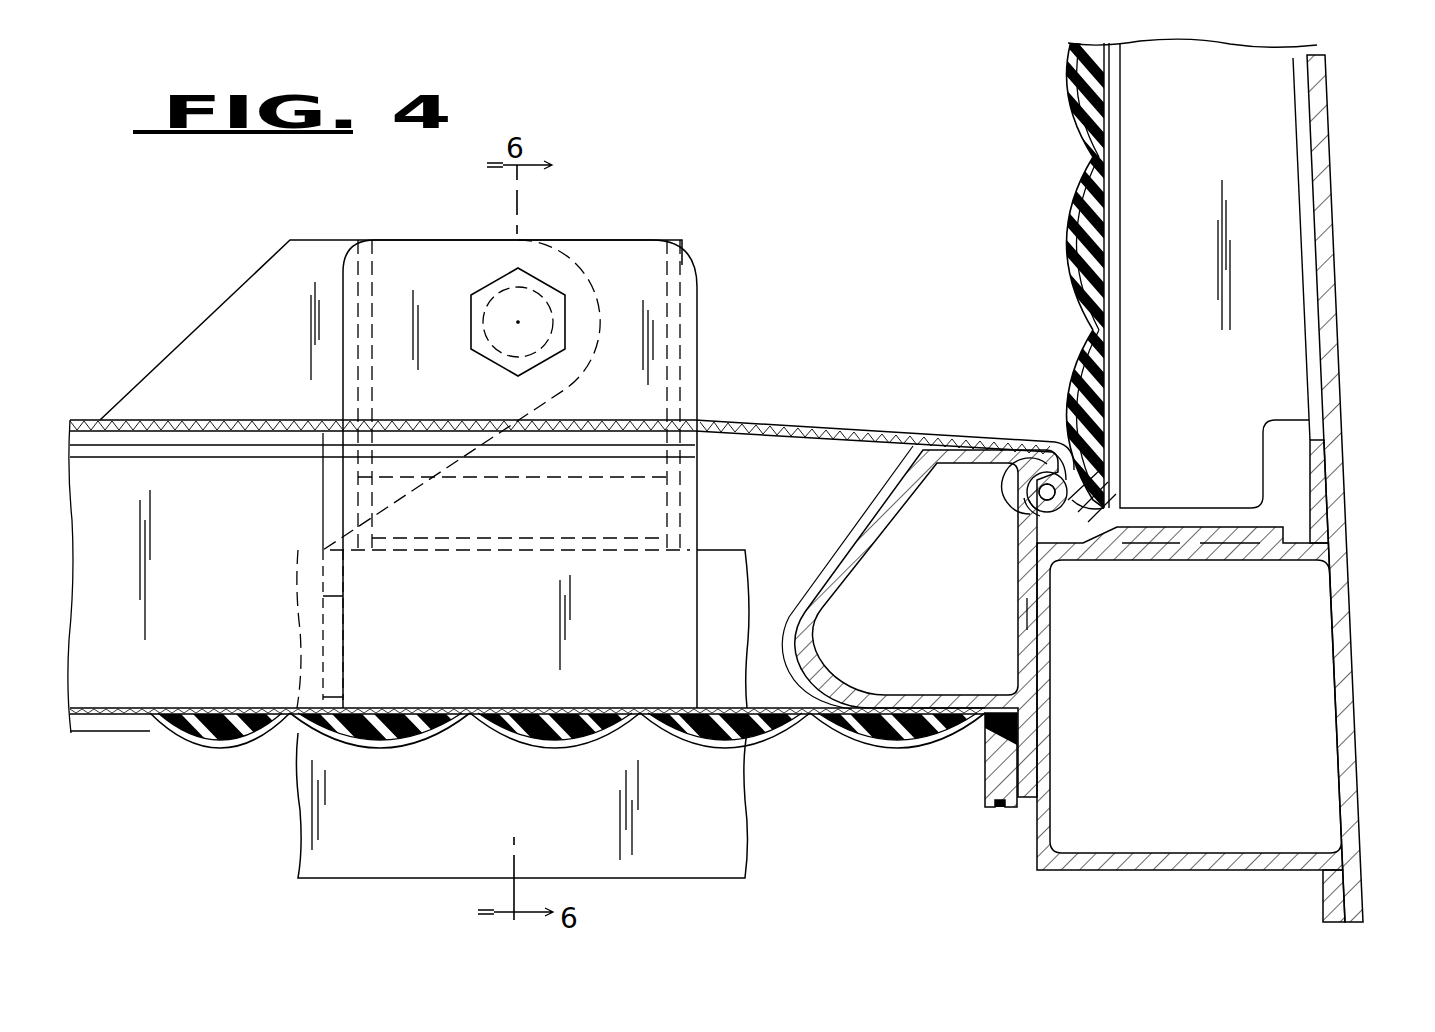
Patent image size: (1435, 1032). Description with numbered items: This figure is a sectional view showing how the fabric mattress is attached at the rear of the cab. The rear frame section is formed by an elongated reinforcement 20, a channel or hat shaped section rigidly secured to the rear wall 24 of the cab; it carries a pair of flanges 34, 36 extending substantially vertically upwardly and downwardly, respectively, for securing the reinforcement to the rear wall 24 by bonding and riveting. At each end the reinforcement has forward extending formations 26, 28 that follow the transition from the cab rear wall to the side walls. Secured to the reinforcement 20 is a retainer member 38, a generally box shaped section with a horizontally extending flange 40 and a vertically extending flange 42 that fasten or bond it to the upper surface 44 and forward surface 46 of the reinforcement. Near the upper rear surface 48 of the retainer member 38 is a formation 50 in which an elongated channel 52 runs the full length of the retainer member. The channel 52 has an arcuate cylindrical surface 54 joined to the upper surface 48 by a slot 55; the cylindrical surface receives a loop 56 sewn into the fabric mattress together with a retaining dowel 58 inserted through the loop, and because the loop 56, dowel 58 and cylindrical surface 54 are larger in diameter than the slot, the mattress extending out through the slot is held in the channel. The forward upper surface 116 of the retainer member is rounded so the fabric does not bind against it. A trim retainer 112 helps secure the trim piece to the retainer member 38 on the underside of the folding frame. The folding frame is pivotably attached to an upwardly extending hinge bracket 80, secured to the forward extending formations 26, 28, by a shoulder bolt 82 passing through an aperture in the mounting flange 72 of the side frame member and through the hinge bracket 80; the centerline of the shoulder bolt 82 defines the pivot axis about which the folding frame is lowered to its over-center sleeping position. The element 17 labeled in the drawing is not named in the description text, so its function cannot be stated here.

The panel 17 is at (767, 425).
The mounting flange 72 is at (292, 349).
The hinge bracket 80 is at (688, 272).
The shoulder bolt 82 is at (545, 290).
The forward extending formation 26 is at (715, 808).
The forward extending formation 28 is at (475, 810).
The forward upper surface 116 is at (868, 500).
The retainer member 38 is at (833, 583).
The upper rear surface 48 is at (1062, 470).
The formation 50 is at (1027, 480).
The arcuate cylindrical surface 54 is at (1030, 494).
The loop 56 is at (1031, 504).
The elongated channel 52 is at (1039, 519).
The slot 55 is at (1080, 500).
The retaining dowel 58 is at (1087, 505).
The elongated reinforcement 20 is at (1045, 655).
The forward surface 46 is at (1030, 615).
The upper surface 44 is at (1143, 540).
The vertically extending flange 42 is at (1213, 537).
The flange 36 is at (1320, 889).
The flange 34 is at (1320, 492).
The rear wall 24 is at (1333, 318).
The horizontally extending flange 40 is at (1028, 740).
The trim retainer 112 is at (998, 797).